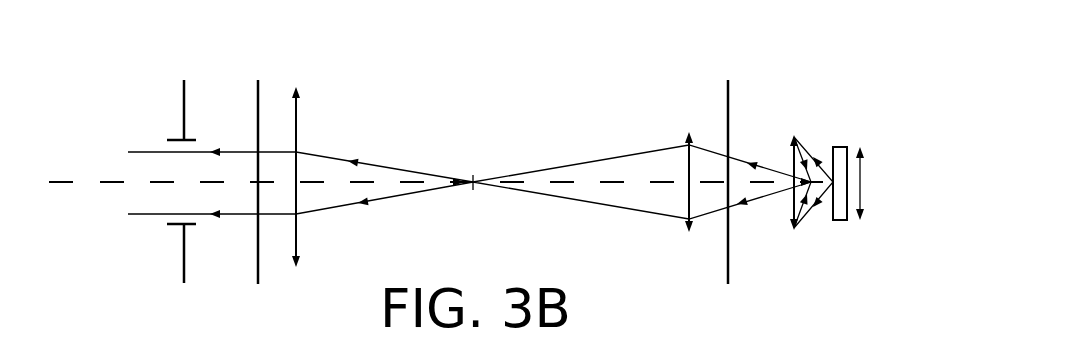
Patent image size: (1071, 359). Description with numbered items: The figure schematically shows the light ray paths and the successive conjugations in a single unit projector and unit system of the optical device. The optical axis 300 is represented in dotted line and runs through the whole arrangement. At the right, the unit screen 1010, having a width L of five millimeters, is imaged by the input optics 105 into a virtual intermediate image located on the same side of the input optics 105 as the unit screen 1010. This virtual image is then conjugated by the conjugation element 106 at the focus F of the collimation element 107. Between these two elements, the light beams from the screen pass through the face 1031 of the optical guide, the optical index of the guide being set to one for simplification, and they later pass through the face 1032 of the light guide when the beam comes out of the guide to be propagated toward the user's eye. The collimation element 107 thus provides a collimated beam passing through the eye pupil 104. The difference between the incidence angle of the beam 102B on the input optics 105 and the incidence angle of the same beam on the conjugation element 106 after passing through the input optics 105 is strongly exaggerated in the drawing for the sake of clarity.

The eye pupil 104 is at (147, 104).
The face of the light guide 1032 is at (257, 98).
The collimation element 107 is at (300, 112).
The beam 102B is at (588, 162).
The optical axis 300 is at (104, 183).
The conjugation element 106 is at (689, 235).
The face of the optical guide 1031 is at (728, 100).
The input optics 105 is at (793, 140).
The unit screen 1010 is at (840, 146).